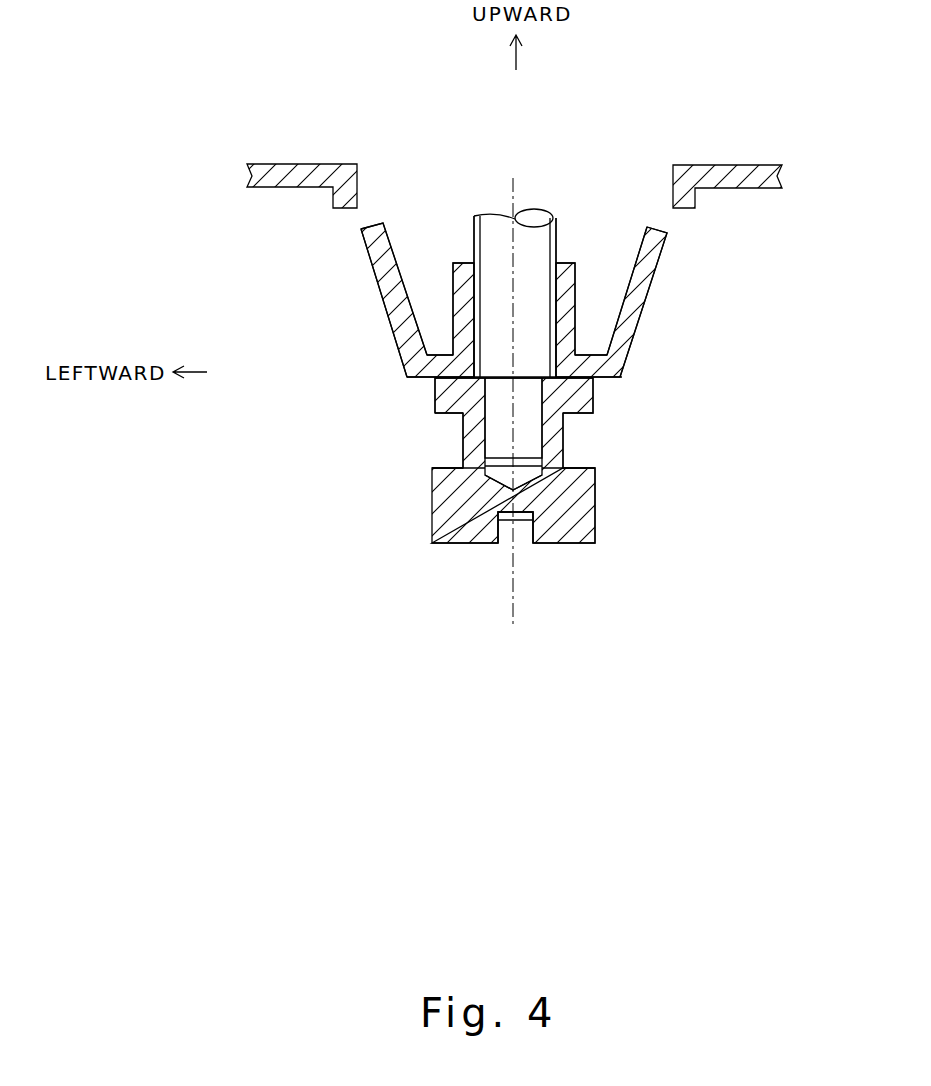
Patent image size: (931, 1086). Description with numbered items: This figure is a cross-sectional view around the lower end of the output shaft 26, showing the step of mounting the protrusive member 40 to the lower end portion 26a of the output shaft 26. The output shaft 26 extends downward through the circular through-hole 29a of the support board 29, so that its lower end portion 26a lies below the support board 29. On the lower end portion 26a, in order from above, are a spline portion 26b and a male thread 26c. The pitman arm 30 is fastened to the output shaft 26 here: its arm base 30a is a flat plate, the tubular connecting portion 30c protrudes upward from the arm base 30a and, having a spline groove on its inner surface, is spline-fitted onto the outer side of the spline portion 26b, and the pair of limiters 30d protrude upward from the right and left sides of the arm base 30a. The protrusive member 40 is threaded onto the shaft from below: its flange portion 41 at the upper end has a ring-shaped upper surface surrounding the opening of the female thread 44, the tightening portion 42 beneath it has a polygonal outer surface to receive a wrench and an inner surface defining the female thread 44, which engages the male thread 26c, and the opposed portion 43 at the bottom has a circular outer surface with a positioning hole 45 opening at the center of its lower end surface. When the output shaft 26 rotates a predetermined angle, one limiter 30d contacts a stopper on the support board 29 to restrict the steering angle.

The output shaft 26 is at (602, 299).
The lower end portion 26a is at (500, 235).
The spline portion 26b is at (540, 312).
The male thread 26c is at (527, 427).
The support board 29 is at (340, 163).
The through-hole 29a is at (673, 186).
The pitman arm 30 is at (523, 300).
The arm base 30a is at (440, 357).
The tubular connecting portion 30c is at (453, 300).
The limiters 30d is at (365, 247).
The protrusive member 40 is at (529, 529).
The flange portion 41 is at (433, 405).
The tightening portion 42 is at (462, 443).
The opposed portion 43 is at (430, 492).
The female thread 44 is at (523, 473).
The positioning hole 45 is at (505, 530).